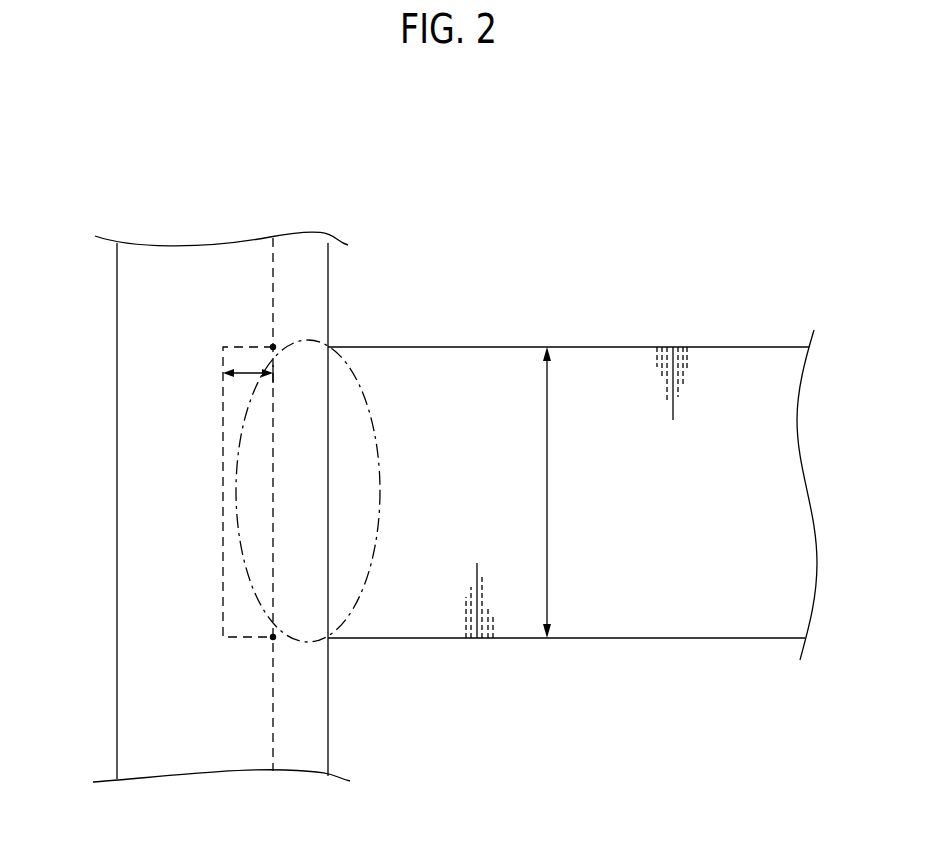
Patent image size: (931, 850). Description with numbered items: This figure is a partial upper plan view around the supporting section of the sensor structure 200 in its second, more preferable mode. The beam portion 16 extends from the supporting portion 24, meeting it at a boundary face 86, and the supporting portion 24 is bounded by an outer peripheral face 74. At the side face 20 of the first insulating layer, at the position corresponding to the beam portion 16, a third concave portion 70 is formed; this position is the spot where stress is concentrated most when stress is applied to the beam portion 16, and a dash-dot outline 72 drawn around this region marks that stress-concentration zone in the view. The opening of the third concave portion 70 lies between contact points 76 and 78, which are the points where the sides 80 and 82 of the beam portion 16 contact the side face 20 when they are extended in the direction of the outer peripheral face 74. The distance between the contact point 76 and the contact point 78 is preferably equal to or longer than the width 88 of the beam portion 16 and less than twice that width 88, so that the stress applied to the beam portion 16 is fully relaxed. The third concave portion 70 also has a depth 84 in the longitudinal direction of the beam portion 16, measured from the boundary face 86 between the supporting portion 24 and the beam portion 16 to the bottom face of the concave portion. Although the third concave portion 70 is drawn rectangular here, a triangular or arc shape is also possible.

The sensor structure (second mode) 200 is at (793, 215).
The beam portion 16 is at (608, 367).
The side face 20 is at (276, 285).
The supporting portion 24 is at (132, 641).
The third concave portion 70 is at (247, 608).
The contact region 72 is at (375, 437).
The outer peripheral face 74 is at (117, 410).
The contact point 76 is at (273, 347).
The contact point 78 is at (273, 637).
The side of beam portion 80 is at (738, 347).
The side of beam portion 82 is at (697, 638).
The depth of concave portion 84 is at (247, 368).
The boundary face 86 is at (328, 515).
The width of beam portion 88 is at (547, 517).